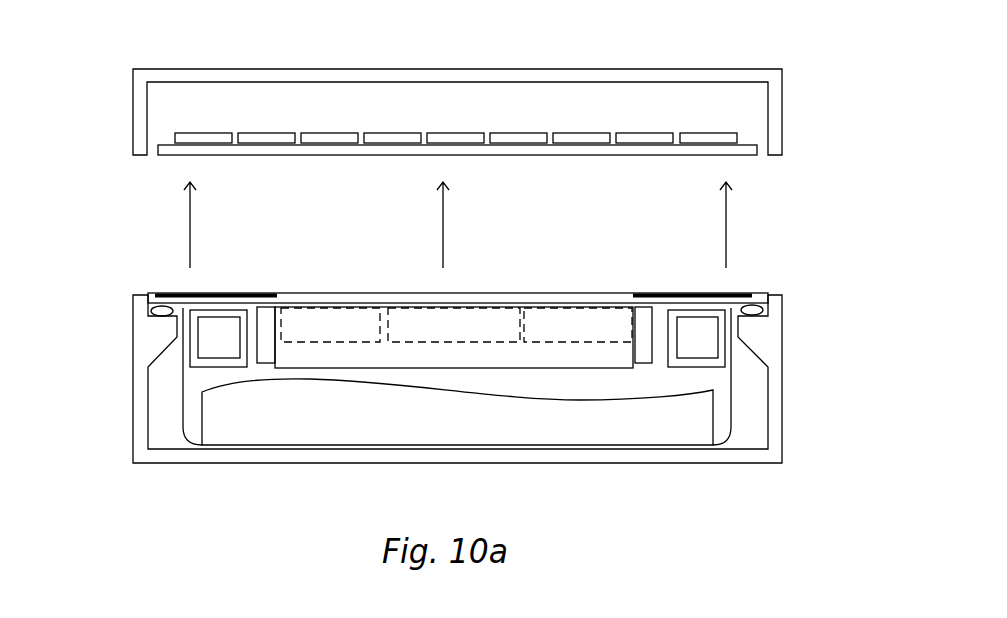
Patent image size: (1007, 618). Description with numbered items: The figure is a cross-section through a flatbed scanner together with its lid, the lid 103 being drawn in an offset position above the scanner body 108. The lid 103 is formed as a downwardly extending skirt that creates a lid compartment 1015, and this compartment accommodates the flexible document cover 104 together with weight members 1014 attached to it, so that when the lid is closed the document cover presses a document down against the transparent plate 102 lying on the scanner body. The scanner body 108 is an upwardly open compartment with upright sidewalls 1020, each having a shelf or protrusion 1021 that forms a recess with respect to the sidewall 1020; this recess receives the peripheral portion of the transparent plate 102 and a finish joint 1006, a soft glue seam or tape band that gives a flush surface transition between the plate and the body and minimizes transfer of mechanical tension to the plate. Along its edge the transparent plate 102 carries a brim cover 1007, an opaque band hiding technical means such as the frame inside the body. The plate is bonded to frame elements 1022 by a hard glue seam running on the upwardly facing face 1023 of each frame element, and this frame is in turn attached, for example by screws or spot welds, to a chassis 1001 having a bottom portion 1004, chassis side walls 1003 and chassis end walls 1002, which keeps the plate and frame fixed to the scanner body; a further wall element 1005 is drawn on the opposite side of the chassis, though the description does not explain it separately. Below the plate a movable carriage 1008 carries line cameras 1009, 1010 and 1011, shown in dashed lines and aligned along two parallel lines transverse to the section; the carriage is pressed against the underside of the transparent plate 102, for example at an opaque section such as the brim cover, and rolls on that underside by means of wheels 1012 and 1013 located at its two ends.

The transparent plate 102 is at (457, 293).
The lid 103 is at (273, 68).
The document cover 104 is at (181, 173).
The scanner body 108 is at (133, 380).
The chassis 1001 is at (559, 422).
The chassis end walls 1002 is at (457, 412).
The chassis side walls 1003 is at (183, 415).
The bottom portion 1004 is at (422, 446).
The right flexible wall 1005 is at (723, 428).
The finish joint 1006 is at (154, 304).
The brim cover 1007 is at (182, 292).
The movable carriage 1008 is at (530, 368).
The line camera 1009 is at (330, 325).
The line camera 1010 is at (454, 325).
The line camera 1011 is at (578, 325).
The wheel 1012 is at (272, 306).
The wheel 1013 is at (627, 293).
The weight members 1014 is at (219, 132).
The lid compartment 1015 is at (403, 106).
The sidewall 1020 is at (775, 398).
The shelf 1021 is at (767, 343).
The frame elements 1022 is at (197, 373).
The upwardly facing face 1023 is at (208, 313).